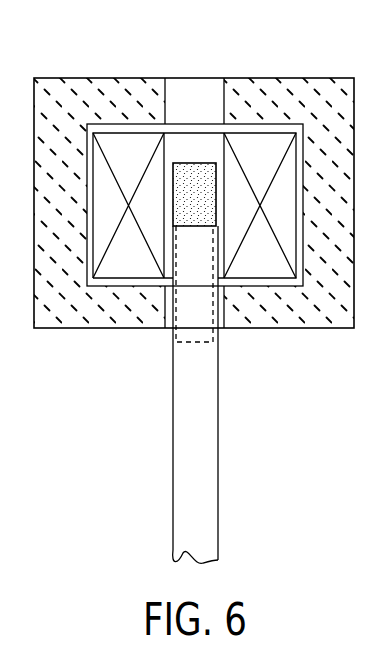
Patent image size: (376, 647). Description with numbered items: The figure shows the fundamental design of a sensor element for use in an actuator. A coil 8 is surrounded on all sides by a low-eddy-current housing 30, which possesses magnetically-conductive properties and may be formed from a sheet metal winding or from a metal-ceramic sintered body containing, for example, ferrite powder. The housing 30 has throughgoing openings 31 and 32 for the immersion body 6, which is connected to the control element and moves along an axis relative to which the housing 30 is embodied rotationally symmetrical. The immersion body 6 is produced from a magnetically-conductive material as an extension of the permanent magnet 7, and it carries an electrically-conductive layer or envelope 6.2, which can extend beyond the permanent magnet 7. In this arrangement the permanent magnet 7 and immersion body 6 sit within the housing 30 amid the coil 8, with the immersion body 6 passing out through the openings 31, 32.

The immersion body 6 is at (200, 408).
The electrically-conductive layer 6.2 is at (177, 330).
The permanent magnet 7 is at (207, 162).
The coil 8 is at (126, 142).
The housing 30 is at (259, 78).
The throughgoing opening 31 is at (218, 330).
The throughgoing opening 32 is at (202, 85).